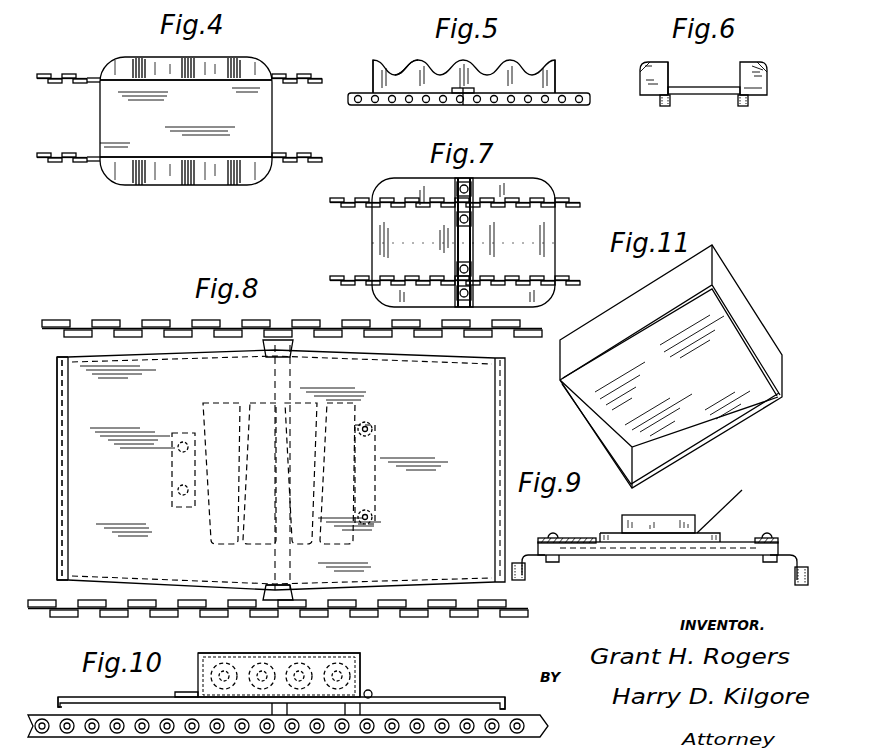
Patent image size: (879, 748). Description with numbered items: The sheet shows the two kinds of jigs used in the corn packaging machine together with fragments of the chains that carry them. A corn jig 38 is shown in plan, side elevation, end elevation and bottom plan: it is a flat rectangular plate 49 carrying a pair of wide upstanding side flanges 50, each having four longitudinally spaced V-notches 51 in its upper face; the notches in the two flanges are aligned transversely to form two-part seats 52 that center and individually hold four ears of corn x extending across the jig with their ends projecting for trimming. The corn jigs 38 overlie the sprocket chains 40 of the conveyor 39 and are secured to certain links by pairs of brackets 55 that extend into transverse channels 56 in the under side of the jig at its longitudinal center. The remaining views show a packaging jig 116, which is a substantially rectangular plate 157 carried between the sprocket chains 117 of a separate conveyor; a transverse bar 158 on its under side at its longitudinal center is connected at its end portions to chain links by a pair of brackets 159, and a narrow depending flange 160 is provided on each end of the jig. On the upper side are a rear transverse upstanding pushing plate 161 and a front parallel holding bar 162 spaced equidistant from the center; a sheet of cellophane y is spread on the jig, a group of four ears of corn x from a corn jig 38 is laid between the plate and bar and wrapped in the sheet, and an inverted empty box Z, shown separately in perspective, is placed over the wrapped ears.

In FIG. 4, the corn jig 38 is at (98, 57).
In FIG. 5, the corn jig 38 is at (559, 72).
In FIG. 6, the corn jig 38 is at (719, 78).
In FIG. 7, the corn jig 38 is at (366, 237).
In FIG. 5, the conveyor 39 is at (548, 105).
In FIG. 7, the conveyor 39 is at (571, 198).
In FIG. 4, the sprocket chains 40 is at (64, 92).
In FIG. 5, the sprocket chains 40 is at (561, 106).
In FIG. 6, the sprocket chains 40 is at (660, 107).
In FIG. 7, the sprocket chains 40 is at (430, 212).
In FIG. 4, the flat rectangular plate 49 is at (270, 130).
In FIG. 6, the flat rectangular plate 49 is at (698, 96).
In FIG. 7, the flat rectangular plate 49 is at (548, 240).
In FIG. 5, the side flanges 50 is at (372, 80).
In FIG. 6, the side flanges 50 is at (738, 76).
In FIG. 4, the V-notches 51 is at (207, 156).
In FIG. 5, the V-notches 51 is at (430, 66).
In FIG. 4, the two-part seats 52 is at (250, 80).
In FIG. 5, the two-part seats 52 is at (492, 66).
In FIG. 5, the brackets 55 is at (463, 96).
In FIG. 7, the brackets 55 is at (473, 185).
In FIG. 5, the transverse channels 56 is at (452, 94).
In FIG. 7, the transverse channels 56 is at (476, 246).
In FIG. 8, the packaging jig 116 is at (503, 425).
In FIG. 9, the packaging jig 116 is at (749, 538).
In FIG. 10, the packaging jig 116 is at (98, 698).
In FIG. 8, the sprocket chains 117 is at (155, 322).
In FIG. 9, the sprocket chains 117 is at (526, 577).
In FIG. 10, the sprocket chains 117 is at (452, 715).
In FIG. 8, the rectangular plate 157 is at (58, 538).
In FIG. 9, the rectangular plate 157 is at (590, 531).
In FIG. 8, the transverse bar 158 is at (293, 565).
In FIG. 9, the transverse bar 158 is at (592, 554).
In FIG. 10, the transverse bar 158 is at (270, 708).
In FIG. 8, the brackets 159 is at (270, 353).
In FIG. 9, the brackets 159 is at (556, 558).
In FIG. 10, the brackets 159 is at (350, 709).
In FIG. 8, the depending flange 160 is at (63, 498).
In FIG. 10, the depending flange 160 is at (57, 700).
In FIG. 8, the pushing plate 161 is at (172, 497).
In FIG. 10, the pushing plate 161 is at (190, 692).
In FIG. 8, the holding bar 162 is at (377, 506).
In FIG. 10, the holding bar 162 is at (375, 693).
In FIG. 8, the ears of corn x is at (349, 413).
In FIG. 10, the ears of corn x is at (262, 676).
In FIG. 8, the sheet of cellophane y is at (502, 398).
In FIG. 10, the sheet of cellophane y is at (342, 681).
In FIG. 9, the inverted empty box Z is at (686, 515).
In FIG. 10, the inverted empty box Z is at (362, 668).
In FIG. 11, the inverted empty box Z is at (730, 418).